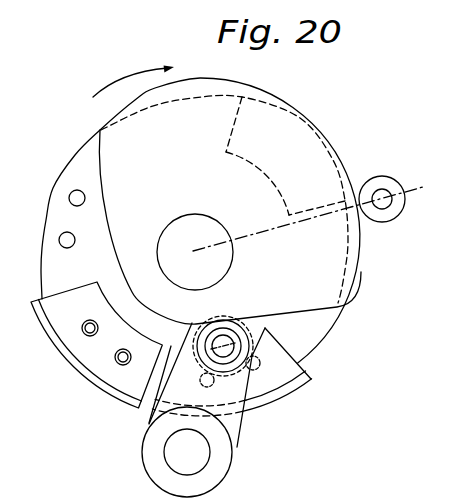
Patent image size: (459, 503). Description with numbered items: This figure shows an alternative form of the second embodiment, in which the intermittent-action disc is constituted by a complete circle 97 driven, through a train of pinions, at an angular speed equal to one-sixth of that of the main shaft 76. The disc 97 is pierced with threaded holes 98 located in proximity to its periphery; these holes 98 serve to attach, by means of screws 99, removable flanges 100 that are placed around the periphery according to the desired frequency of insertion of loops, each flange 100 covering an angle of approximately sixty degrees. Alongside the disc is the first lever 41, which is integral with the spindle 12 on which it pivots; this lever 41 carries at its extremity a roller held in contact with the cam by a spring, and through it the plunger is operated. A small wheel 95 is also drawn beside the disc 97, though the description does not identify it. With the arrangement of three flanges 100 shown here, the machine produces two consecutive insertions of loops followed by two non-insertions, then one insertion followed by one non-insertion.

The spindle 12 is at (185, 449).
The first lever 41 is at (242, 430).
The main shaft 76 is at (185, 226).
The roller 95 is at (406, 207).
The intermittent-action disc 97 is at (327, 327).
The threaded holes 98 is at (69, 199).
The screws 99 is at (115, 357).
The removable flanges 100 is at (242, 97).